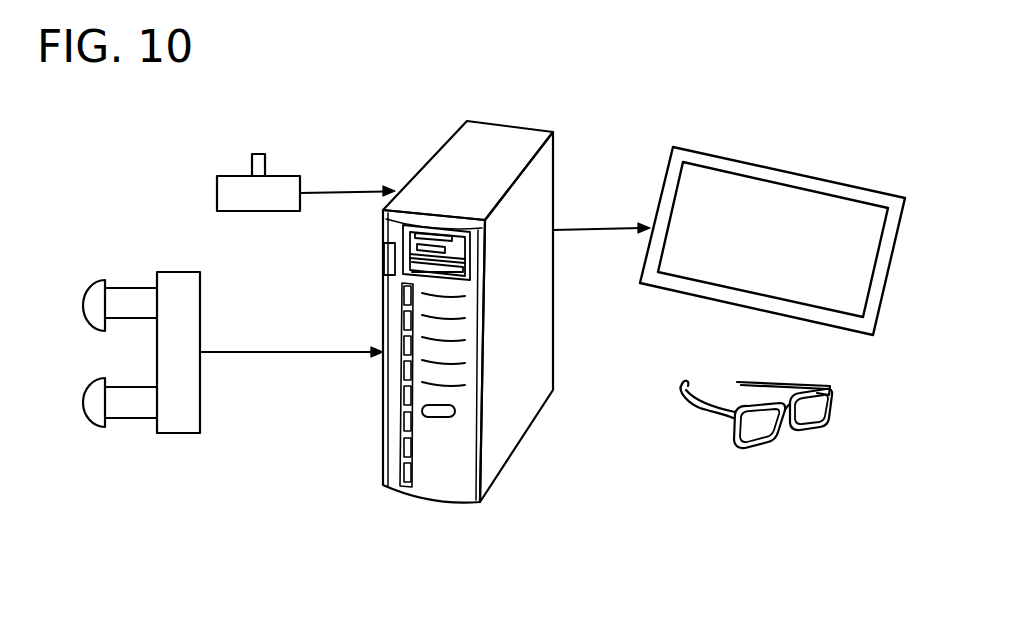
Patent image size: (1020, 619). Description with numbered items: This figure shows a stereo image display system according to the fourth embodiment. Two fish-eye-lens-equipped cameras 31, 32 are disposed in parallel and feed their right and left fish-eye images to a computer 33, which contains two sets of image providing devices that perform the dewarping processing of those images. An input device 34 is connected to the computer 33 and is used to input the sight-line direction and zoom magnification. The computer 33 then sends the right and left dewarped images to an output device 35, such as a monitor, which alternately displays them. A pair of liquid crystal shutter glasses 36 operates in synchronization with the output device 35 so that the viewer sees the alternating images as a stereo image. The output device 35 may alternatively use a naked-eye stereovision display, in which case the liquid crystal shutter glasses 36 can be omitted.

The fish-eye-lens-equipped camera 31 is at (130, 419).
The fish-eye-lens-equipped camera 32 is at (130, 287).
The computer 33 is at (495, 137).
The input device 34 is at (232, 175).
The output device 35 is at (780, 167).
The liquid crystal shutter glasses 36 is at (760, 450).